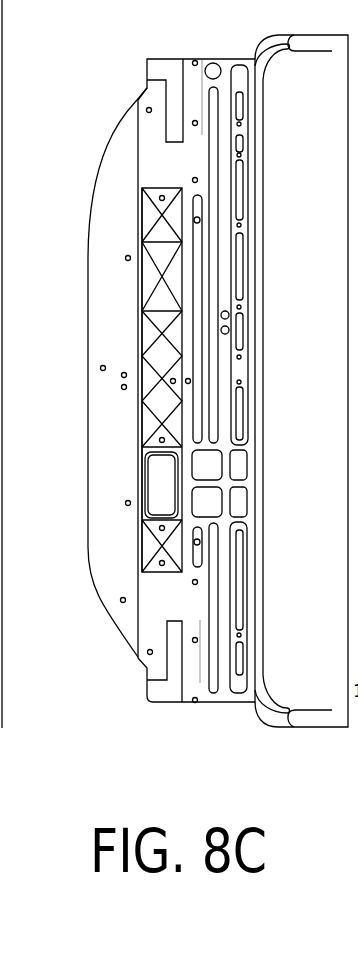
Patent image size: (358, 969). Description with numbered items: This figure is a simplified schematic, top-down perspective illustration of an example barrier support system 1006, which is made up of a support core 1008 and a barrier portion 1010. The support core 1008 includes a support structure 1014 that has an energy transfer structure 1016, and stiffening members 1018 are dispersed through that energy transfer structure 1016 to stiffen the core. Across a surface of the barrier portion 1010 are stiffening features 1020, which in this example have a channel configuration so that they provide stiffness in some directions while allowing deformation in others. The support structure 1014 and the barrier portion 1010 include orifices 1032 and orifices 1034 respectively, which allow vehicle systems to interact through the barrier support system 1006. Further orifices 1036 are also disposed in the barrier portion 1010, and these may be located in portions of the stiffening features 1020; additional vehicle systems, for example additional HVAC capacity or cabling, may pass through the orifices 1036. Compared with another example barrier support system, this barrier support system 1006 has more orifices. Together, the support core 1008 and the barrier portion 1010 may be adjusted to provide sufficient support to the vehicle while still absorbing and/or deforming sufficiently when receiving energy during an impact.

The barrier support system 1006 is at (232, 757).
The support core 1008 is at (133, 580).
The barrier portion 1010 is at (197, 708).
The support structure 1014 is at (105, 204).
The energy transfer structure 1016 is at (130, 200).
The stiffening members 1018 is at (157, 208).
The stiffening features 1020 is at (197, 220).
The orifices 1032 is at (163, 485).
The orifices 1034 is at (205, 462).
The orifices 1036 is at (240, 105).